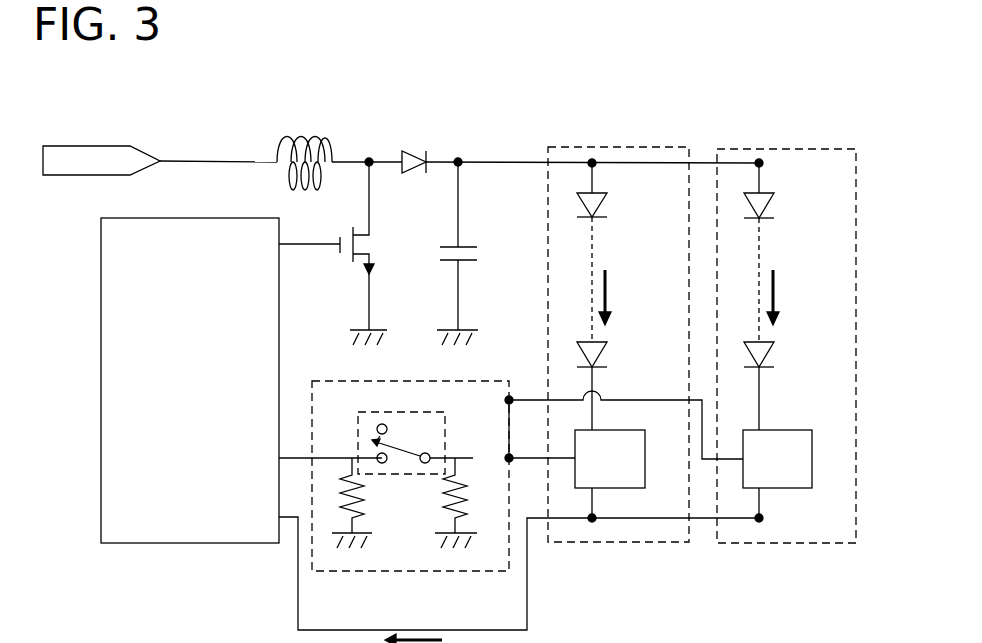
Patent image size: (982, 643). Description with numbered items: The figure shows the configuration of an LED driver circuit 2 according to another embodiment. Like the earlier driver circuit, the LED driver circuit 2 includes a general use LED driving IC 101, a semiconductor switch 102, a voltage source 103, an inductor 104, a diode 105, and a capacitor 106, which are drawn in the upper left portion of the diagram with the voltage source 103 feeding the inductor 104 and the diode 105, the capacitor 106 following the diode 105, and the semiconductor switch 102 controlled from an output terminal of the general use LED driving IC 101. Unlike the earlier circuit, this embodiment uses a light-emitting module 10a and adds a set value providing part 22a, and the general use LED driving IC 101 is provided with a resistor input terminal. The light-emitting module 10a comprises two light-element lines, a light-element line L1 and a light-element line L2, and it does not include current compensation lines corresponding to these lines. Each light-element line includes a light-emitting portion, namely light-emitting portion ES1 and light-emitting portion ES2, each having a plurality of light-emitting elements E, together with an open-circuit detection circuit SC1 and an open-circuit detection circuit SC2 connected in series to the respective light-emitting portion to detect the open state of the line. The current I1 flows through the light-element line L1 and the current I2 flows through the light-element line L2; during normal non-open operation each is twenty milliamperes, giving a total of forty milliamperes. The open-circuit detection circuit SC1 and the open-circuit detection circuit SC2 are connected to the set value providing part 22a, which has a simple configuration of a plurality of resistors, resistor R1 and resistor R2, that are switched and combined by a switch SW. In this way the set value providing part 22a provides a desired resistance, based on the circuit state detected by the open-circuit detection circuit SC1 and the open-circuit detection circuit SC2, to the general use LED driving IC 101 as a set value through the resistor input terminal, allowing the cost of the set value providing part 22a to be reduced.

The LED driver circuit 2 is at (448, 78).
The general use LED driving IC 101 is at (188, 545).
The semiconductor switch 102 is at (345, 265).
The voltage source 103 is at (98, 145).
The inductor 104 is at (311, 131).
The diode 105 is at (407, 149).
The capacitor 106 is at (440, 252).
The set value providing part 22a is at (405, 573).
The light-emitting module 10a is at (856, 580).
The switch SW is at (445, 433).
The resistor R1 is at (364, 503).
The resistor R2 is at (468, 503).
The light-emitting element E is at (597, 208).
The light-emitting portion ES1 is at (635, 265).
The light-emitting portion ES2 is at (802, 265).
The current I1 is at (613, 297).
The current I2 is at (782, 297).
The light-element line L1 is at (618, 545).
The light-element line L2 is at (785, 545).
The open-circuit detection circuit SC1 is at (613, 429).
The open-circuit detection circuit SC2 is at (782, 429).